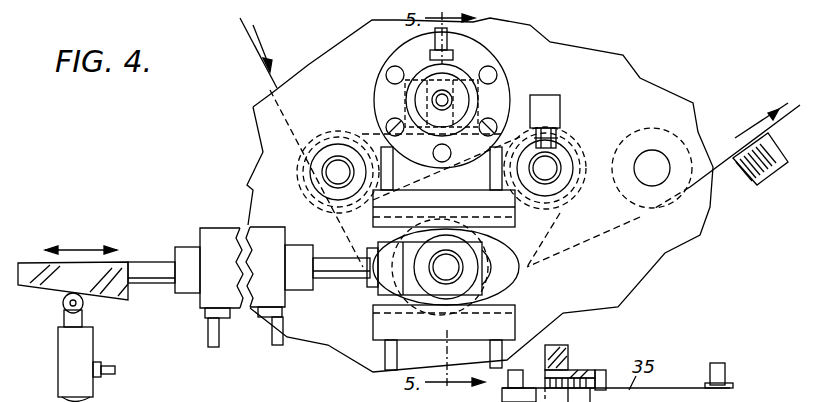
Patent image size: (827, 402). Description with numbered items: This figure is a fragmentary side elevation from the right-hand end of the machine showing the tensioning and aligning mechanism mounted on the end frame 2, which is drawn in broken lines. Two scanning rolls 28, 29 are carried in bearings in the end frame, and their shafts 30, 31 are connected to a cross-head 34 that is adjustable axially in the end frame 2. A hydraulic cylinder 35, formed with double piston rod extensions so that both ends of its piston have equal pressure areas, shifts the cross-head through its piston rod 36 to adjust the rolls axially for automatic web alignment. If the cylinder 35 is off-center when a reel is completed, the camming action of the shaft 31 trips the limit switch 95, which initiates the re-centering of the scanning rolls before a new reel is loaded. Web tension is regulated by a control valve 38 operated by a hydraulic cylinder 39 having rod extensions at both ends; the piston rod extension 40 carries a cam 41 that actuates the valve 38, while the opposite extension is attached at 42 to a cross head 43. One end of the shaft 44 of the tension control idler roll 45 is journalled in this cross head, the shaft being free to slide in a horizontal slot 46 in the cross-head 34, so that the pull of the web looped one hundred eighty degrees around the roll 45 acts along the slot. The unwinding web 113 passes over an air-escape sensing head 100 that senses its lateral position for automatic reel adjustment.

The end frame 2 is at (625, 63).
The scanning roll 28 is at (326, 133).
The scanning roll 29 is at (578, 145).
The shaft 30 is at (333, 176).
The shaft 31 is at (553, 178).
The cross-head 34 is at (515, 218).
The hydraulic cylinder 35 is at (420, 68).
The piston rod 36 is at (445, 95).
The control valve 38 is at (93, 388).
The hydraulic cylinder 39 is at (225, 232).
The piston rod extension 40 is at (143, 262).
The cam 41 is at (87, 300).
The attachment point 42 is at (374, 270).
The cross head 43 is at (478, 267).
The shaft 44 is at (440, 280).
The tension control idler roll 45 is at (473, 272).
The horizontal slot 46 is at (492, 258).
The limit switch 95 is at (546, 97).
The air-escape sensing head 100 is at (768, 168).
The unwinding web 113 is at (720, 160).